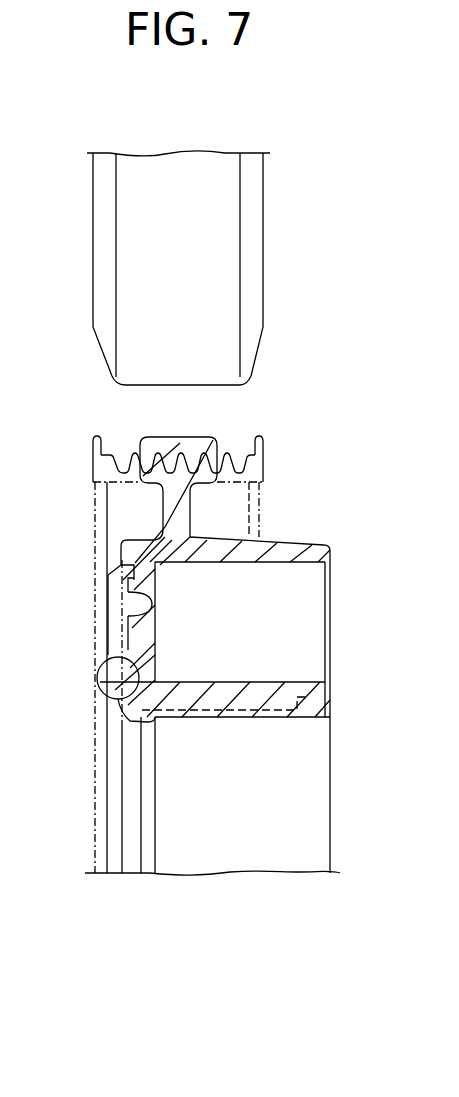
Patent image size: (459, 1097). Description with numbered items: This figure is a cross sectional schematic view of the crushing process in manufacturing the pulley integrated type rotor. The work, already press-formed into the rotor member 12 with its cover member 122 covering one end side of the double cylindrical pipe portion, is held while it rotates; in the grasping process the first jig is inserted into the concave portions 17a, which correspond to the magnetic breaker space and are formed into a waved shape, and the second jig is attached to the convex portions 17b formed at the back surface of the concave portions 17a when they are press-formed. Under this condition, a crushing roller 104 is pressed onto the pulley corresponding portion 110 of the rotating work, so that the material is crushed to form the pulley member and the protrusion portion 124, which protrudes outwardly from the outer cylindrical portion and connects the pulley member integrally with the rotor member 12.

The crushing roller 104 is at (263, 263).
The pulley corresponding portion 110 is at (180, 443).
The protrusion portion 124 is at (163, 503).
The rotor member 12 is at (301, 546).
The convex portions 17b is at (108, 588).
The concave portions 17a is at (140, 607).
The cover member 122 is at (120, 806).